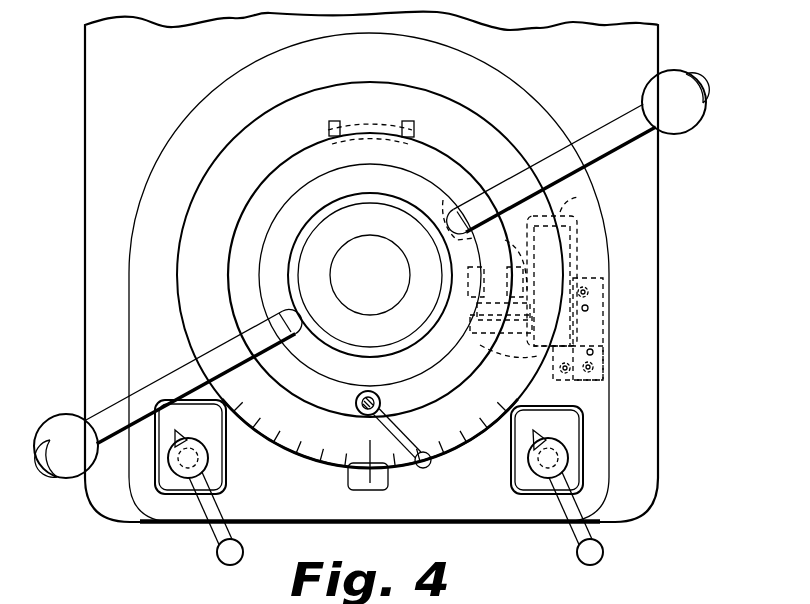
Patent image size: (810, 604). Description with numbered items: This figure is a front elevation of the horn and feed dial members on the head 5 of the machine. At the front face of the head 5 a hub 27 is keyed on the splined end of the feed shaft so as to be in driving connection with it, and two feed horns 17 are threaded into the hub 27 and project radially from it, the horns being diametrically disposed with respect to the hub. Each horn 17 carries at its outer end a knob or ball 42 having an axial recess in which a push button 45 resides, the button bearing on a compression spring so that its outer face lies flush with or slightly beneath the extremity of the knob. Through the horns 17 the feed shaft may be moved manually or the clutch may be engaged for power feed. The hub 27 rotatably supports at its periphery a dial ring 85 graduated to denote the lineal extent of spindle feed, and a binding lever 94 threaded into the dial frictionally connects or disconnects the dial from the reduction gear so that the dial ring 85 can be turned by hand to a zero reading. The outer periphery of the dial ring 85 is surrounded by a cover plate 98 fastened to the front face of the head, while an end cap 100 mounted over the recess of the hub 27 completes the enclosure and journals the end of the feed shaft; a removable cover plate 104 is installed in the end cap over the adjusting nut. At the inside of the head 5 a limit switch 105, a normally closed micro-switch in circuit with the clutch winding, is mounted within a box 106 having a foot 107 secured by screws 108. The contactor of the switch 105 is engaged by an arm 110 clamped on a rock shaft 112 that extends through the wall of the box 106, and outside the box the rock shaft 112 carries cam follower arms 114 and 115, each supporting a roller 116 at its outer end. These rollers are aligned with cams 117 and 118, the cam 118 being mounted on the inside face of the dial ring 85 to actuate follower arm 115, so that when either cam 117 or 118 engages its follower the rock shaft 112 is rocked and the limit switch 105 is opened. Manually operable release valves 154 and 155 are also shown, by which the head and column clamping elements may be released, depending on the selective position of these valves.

The head 5 is at (118, 87).
The cover plate 98 is at (183, 156).
The dial ring 85 is at (192, 289).
The hub 27 is at (398, 186).
The end cap 100 is at (356, 202).
The removable cover plate 104 is at (357, 250).
The feed horns 17 is at (172, 381).
The knob 42 is at (67, 416).
The push button 45 is at (46, 462).
The cam 118 is at (385, 118).
The cam 117 is at (462, 200).
The roller 116 is at (503, 256).
The cam follower arm 115 is at (500, 272).
The cam follower arm 114 is at (478, 305).
The rock shaft 112 is at (486, 355).
The arm 110 is at (572, 375).
The foot 107 is at (603, 310).
The screws 108 is at (600, 380).
The limit switch 105 is at (577, 233).
The box 106 is at (578, 196).
The binding lever 94 is at (388, 432).
The release valve 154 is at (213, 510).
The release valve 155 is at (556, 501).